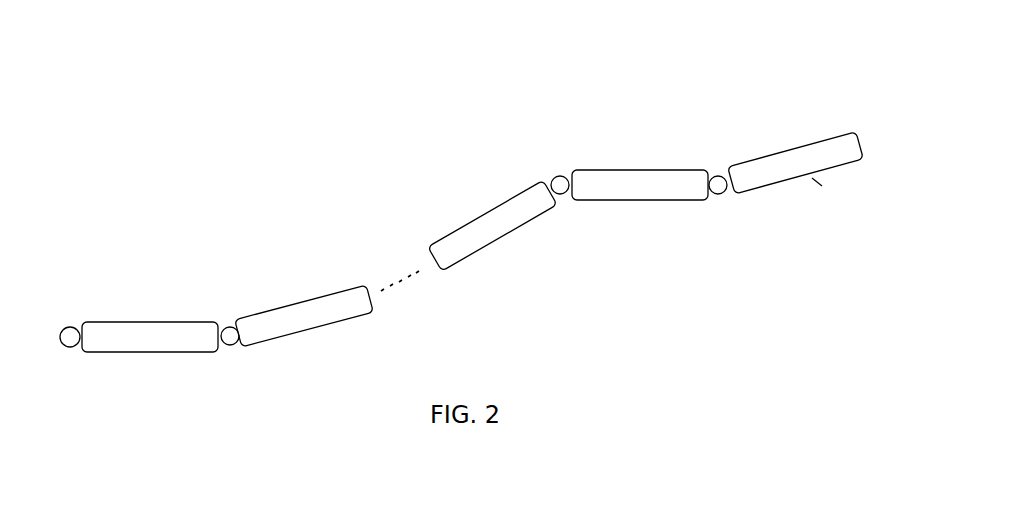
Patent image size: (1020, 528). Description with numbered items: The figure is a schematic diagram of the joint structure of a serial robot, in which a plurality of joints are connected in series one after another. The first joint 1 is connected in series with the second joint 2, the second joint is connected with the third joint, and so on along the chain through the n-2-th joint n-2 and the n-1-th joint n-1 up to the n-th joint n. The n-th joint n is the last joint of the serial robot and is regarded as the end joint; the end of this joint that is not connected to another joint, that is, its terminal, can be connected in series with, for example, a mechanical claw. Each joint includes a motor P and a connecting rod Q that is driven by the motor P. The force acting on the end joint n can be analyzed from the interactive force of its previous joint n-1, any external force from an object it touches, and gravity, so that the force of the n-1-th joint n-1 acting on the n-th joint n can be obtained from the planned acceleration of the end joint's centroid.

The first joint 1 is at (143, 302).
The second joint 2 is at (275, 298).
The n-2-th joint n-2 is at (455, 208).
The n-1-th joint n-1 is at (625, 163).
The n-th joint n is at (778, 127).
The motor P is at (718, 203).
The connecting rod Q is at (817, 182).